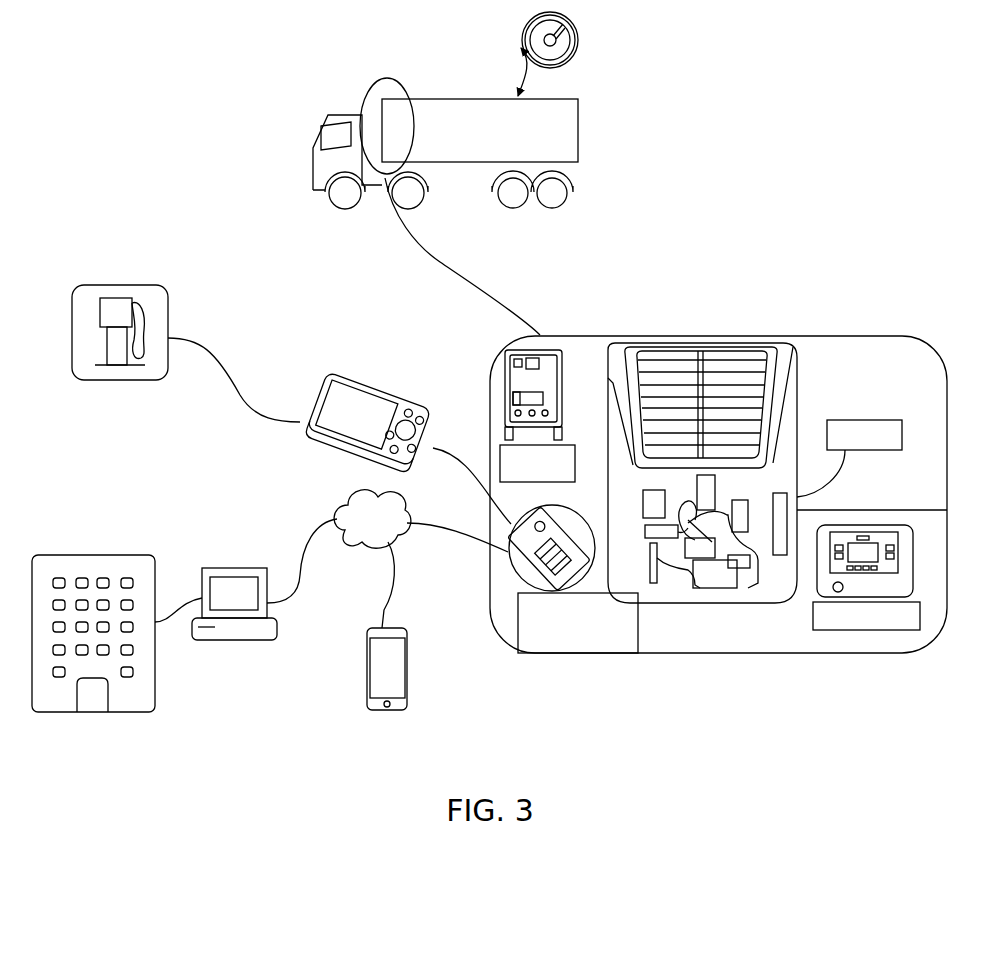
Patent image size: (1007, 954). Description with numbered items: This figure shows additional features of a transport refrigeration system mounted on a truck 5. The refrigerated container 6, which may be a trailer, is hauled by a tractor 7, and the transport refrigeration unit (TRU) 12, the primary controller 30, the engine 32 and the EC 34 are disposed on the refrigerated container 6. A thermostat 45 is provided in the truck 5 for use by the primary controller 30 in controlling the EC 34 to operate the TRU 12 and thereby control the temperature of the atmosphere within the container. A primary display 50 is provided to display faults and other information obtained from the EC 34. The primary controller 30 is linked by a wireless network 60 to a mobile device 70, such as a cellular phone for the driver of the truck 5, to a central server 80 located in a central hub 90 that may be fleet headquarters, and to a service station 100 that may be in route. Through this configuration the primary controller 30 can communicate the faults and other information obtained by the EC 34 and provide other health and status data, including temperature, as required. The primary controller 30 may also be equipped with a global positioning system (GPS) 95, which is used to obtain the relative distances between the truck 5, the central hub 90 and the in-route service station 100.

The truck 5 is at (430, 117).
The refrigerated container 6 is at (460, 98).
The tractor 7 is at (322, 126).
The transport refrigeration unit (TRU) 12 is at (722, 392).
The primary controller 30 is at (573, 579).
The engine 32 is at (729, 490).
The EC 34 is at (552, 358).
The thermostat 45 is at (578, 53).
The primary display 50 is at (866, 577).
The wireless network 60 is at (372, 519).
The mobile device 70 is at (407, 683).
The central server 80 is at (234, 604).
The central hub 90 is at (135, 713).
The global positioning system (GPS) 95 is at (304, 400).
The service station 100 is at (117, 380).